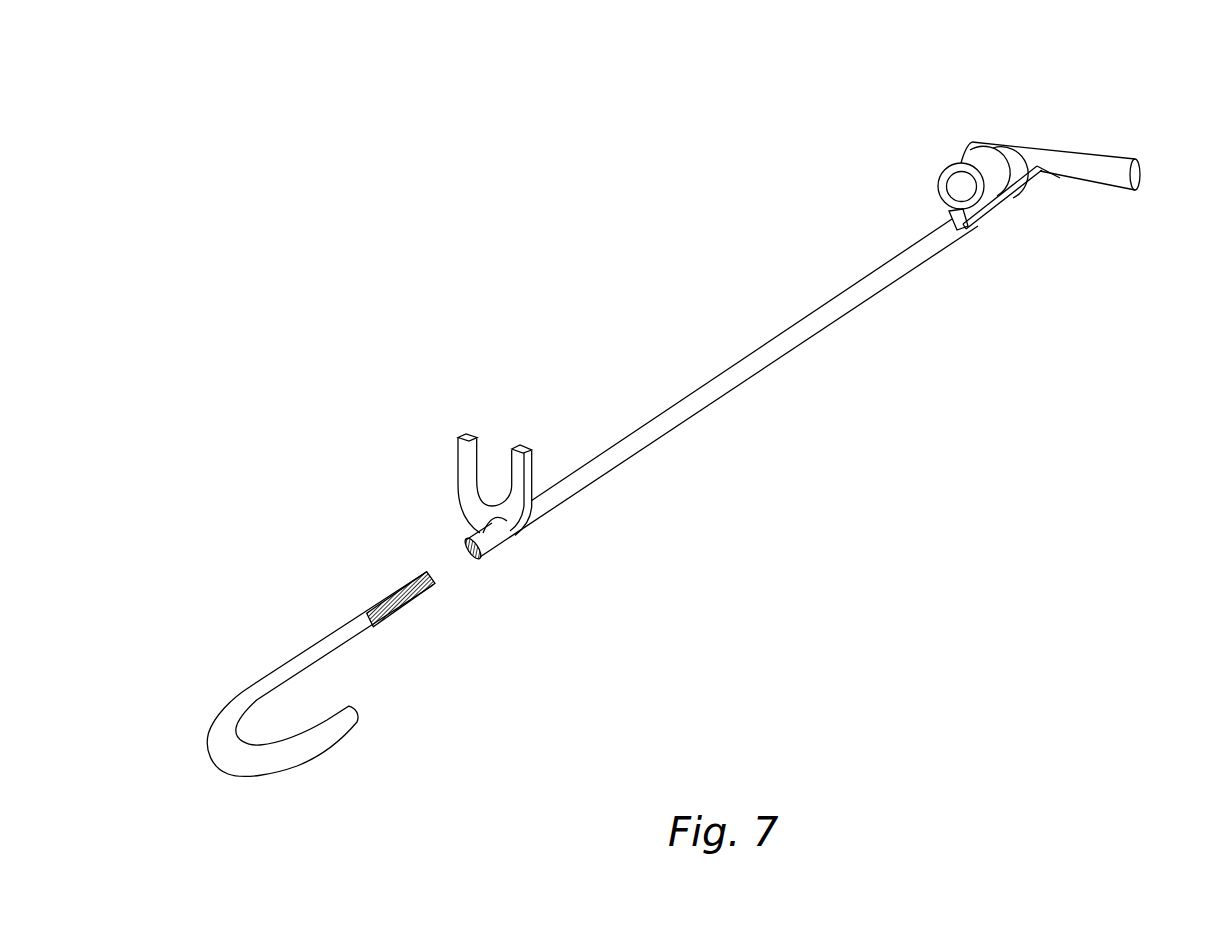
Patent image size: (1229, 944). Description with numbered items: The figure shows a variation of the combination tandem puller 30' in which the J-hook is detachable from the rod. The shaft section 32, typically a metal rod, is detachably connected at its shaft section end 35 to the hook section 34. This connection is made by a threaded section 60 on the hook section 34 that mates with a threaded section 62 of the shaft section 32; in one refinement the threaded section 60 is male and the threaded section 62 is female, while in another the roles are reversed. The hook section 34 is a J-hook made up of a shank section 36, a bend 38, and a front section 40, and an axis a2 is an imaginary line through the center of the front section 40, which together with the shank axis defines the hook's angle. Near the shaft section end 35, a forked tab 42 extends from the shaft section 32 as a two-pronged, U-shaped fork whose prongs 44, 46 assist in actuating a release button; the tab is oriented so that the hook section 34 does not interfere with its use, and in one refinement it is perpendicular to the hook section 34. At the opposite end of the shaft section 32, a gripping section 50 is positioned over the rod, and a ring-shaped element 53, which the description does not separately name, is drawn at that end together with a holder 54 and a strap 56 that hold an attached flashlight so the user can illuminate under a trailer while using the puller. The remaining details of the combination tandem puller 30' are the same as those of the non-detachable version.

The combination tandem puller 30' is at (552, 226).
The shaft section 32 is at (708, 402).
The hook section 34 is at (325, 699).
The shaft section end 35 is at (441, 525).
The shank section 36 is at (257, 688).
The bend 38 is at (208, 775).
The front section 40 is at (327, 747).
The forked tab 42 is at (462, 466).
The prong 44 is at (465, 435).
The prong 46 is at (520, 447).
The gripping section 50 is at (1033, 183).
The ring 53 is at (960, 165).
The holder 54 is at (953, 217).
The strap 56 is at (1008, 178).
The threaded section 60 is at (428, 595).
The threaded section 62 is at (468, 557).
The axis a2 is at (220, 808).